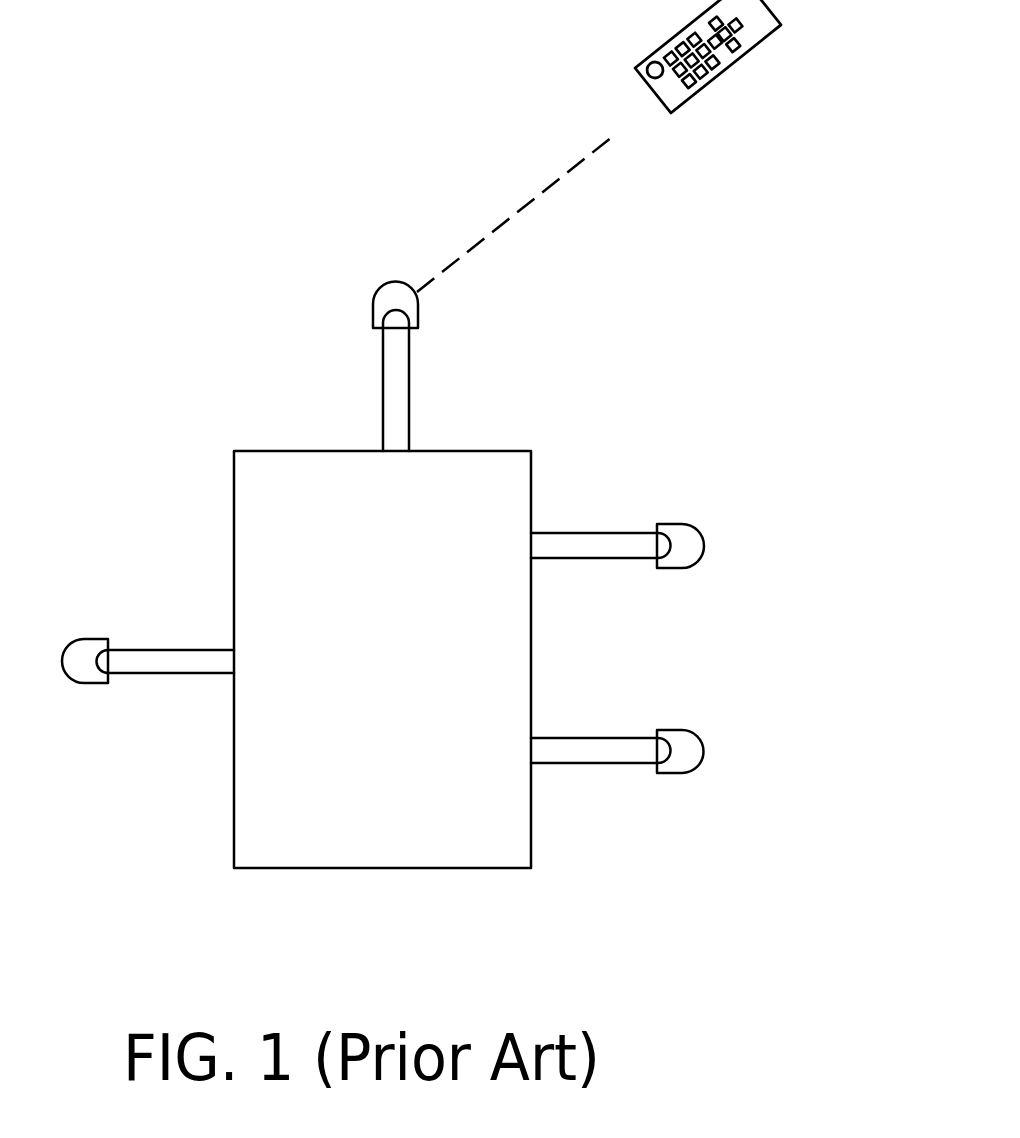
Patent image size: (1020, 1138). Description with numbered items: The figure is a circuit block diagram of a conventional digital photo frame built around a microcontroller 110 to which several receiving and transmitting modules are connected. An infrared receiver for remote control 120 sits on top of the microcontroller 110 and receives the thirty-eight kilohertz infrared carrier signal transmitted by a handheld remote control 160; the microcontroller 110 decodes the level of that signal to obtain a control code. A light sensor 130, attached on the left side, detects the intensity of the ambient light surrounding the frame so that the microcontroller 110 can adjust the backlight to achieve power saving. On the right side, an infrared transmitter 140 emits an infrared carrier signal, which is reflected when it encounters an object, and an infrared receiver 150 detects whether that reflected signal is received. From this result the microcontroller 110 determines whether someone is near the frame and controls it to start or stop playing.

The microcontroller 110 is at (287, 490).
The infrared receiver for remote control 120 is at (390, 303).
The light sensor 130 is at (83, 682).
The infrared transmitter 140 is at (690, 550).
The infrared receiver 150 is at (687, 755).
The remote control 160 is at (727, 62).